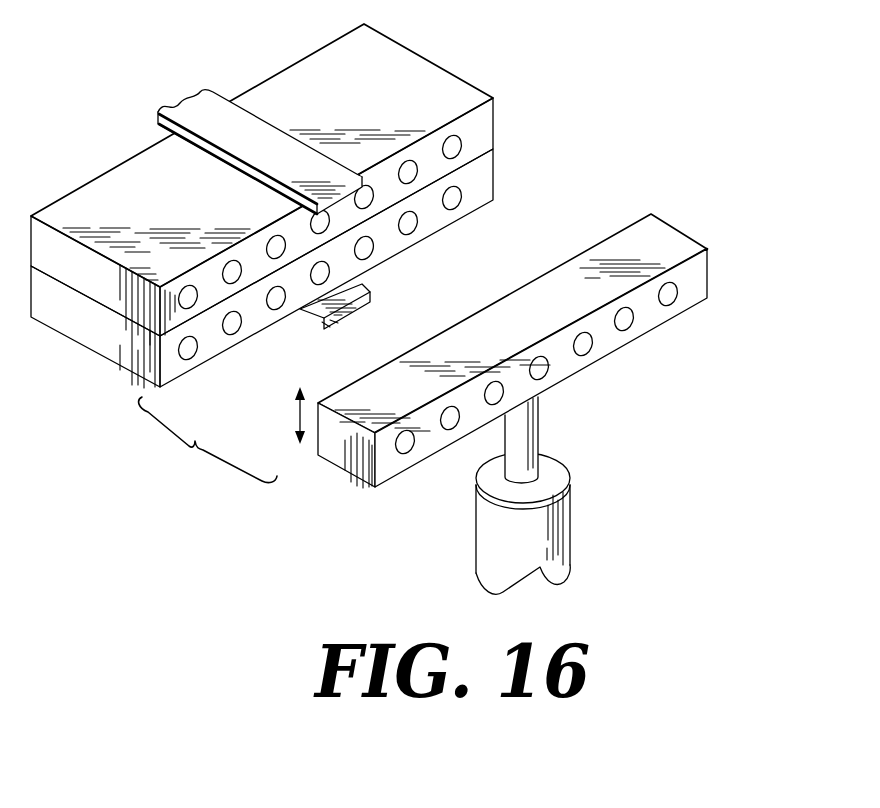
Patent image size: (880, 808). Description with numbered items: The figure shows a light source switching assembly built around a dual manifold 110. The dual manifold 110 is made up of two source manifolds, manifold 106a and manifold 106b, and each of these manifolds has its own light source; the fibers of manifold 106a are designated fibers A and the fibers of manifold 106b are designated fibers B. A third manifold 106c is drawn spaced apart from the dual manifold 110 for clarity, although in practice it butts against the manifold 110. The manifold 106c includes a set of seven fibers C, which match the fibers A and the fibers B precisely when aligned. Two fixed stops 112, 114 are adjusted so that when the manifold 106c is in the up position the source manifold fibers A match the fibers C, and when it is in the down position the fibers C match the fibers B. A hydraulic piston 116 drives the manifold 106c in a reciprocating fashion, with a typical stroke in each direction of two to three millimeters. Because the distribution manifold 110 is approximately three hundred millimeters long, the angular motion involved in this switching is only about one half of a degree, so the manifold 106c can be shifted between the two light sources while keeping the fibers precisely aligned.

The dual manifold 110 is at (315, 194).
The manifold 106a is at (295, 189).
The manifold 106b is at (315, 259).
The manifold 106c is at (544, 343).
The fixed stop 112 is at (247, 131).
The fixed stop 114 is at (355, 290).
The hydraulic piston 116 is at (557, 507).
The fibers A is at (461, 146).
The fibers B is at (462, 200).
The fibers C is at (631, 318).